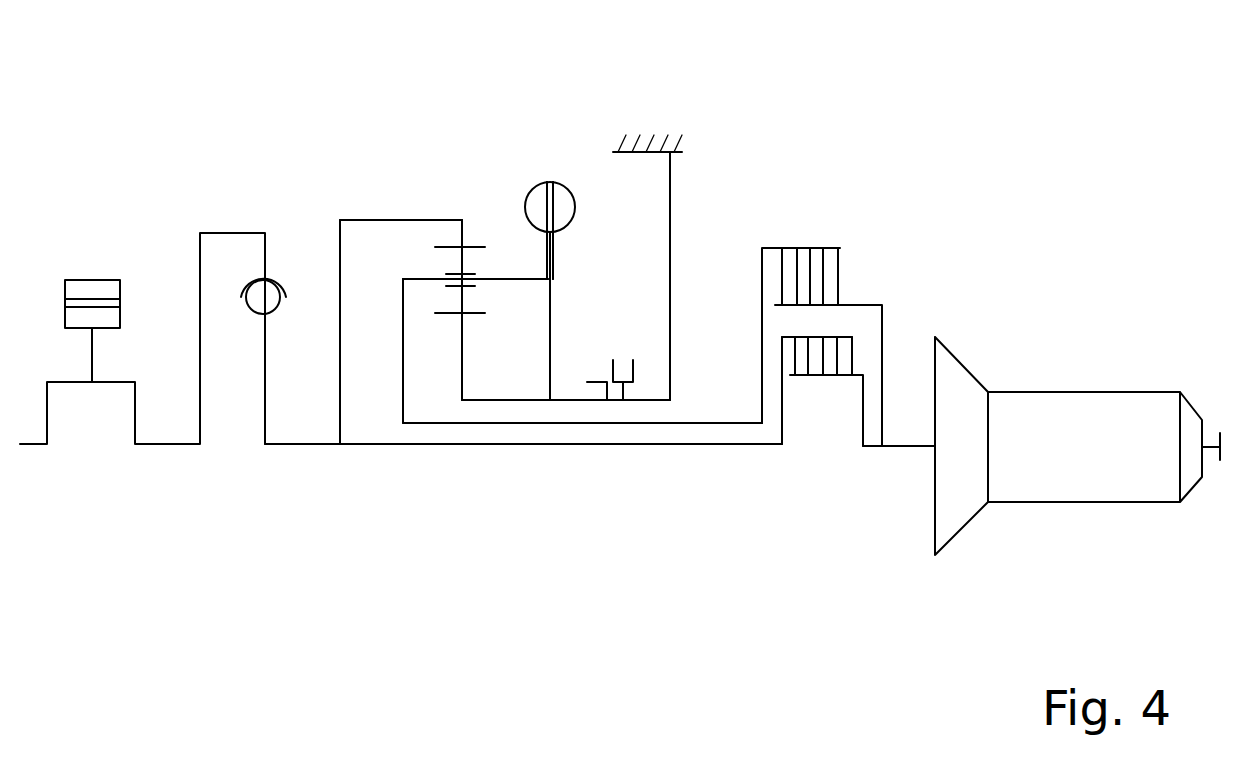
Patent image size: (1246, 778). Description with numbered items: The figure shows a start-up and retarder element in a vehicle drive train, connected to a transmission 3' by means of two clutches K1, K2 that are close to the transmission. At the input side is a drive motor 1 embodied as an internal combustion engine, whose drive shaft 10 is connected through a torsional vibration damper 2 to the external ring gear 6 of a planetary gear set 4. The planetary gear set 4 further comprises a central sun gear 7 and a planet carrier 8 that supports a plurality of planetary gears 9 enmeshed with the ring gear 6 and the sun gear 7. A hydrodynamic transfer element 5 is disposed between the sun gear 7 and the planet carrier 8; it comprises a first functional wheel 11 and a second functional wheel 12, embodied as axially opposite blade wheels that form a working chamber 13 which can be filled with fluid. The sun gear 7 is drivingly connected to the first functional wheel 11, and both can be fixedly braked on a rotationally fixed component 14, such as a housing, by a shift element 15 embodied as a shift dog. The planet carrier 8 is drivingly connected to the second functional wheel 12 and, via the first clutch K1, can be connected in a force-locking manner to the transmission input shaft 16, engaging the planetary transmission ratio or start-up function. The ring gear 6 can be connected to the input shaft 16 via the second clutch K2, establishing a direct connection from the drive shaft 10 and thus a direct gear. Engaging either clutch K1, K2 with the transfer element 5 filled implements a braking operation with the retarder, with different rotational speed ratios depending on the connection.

The drive motor 1 is at (91, 279).
The torsional vibration damper 2 is at (278, 277).
The external ring gear 6 is at (455, 232).
The planetary gear set 4 is at (450, 216).
The hydrodynamic transfer element 5 is at (535, 186).
The second functional wheel 12 is at (546, 183).
The working chamber 13 is at (565, 182).
The first functional wheel 11 is at (572, 172).
The rotationally fixed component 14 is at (662, 150).
The shift element 15 is at (620, 400).
The drive shaft 10 is at (283, 446).
The planet carrier 8 is at (417, 281).
The central sun gear 7 is at (464, 356).
The planetary gears 9 is at (464, 296).
The first clutch K1 is at (790, 307).
The second clutch K2 is at (818, 376).
The transmission input shaft 16 is at (907, 448).
The transmission 3' is at (1077, 495).